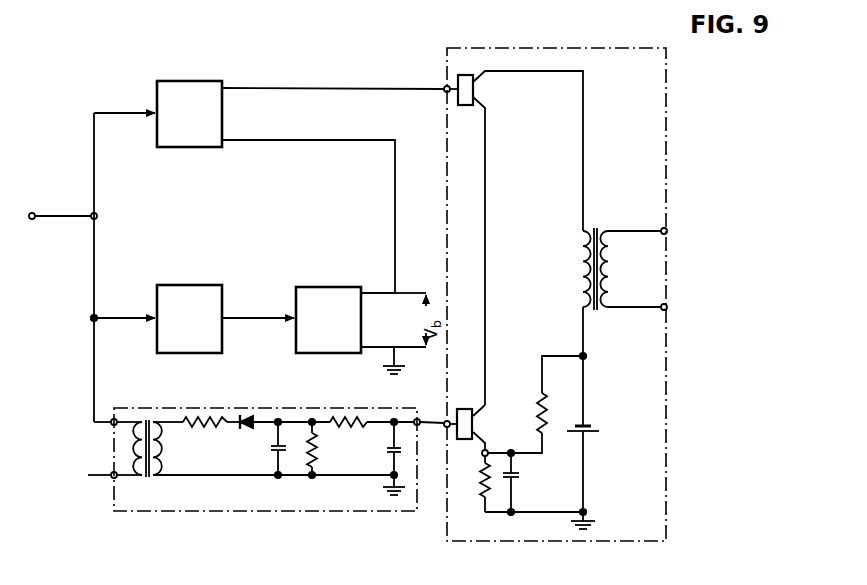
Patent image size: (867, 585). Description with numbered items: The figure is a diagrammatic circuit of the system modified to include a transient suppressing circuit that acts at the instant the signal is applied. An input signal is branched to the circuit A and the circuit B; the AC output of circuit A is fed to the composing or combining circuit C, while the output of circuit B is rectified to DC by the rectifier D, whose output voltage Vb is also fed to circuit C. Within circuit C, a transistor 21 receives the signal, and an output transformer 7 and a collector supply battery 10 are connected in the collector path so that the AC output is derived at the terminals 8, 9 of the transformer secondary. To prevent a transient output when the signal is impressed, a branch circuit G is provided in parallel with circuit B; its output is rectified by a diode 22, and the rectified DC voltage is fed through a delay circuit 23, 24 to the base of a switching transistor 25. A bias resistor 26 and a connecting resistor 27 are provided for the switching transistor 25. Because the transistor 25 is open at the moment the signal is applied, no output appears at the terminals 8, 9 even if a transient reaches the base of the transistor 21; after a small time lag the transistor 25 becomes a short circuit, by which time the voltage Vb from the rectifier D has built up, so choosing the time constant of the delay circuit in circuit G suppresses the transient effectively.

The output transformer 7 is at (600, 232).
The output terminal 8 is at (648, 232).
The output terminal 9 is at (648, 308).
The collector supply battery 10 is at (586, 427).
The transistor 21 is at (474, 89).
The diode 22 is at (249, 428).
The delay circuit resistor 23 is at (352, 418).
The delay circuit capacitor 24 is at (388, 449).
The switching transistor 25 is at (464, 409).
The bias resistor 26 is at (484, 470).
The connecting resistor 27 is at (540, 404).
The circuit A is at (189, 114).
The circuit B is at (189, 319).
The composing or combining circuit C is at (608, 48).
The rectifier D is at (328, 320).
The branch circuit G is at (114, 495).